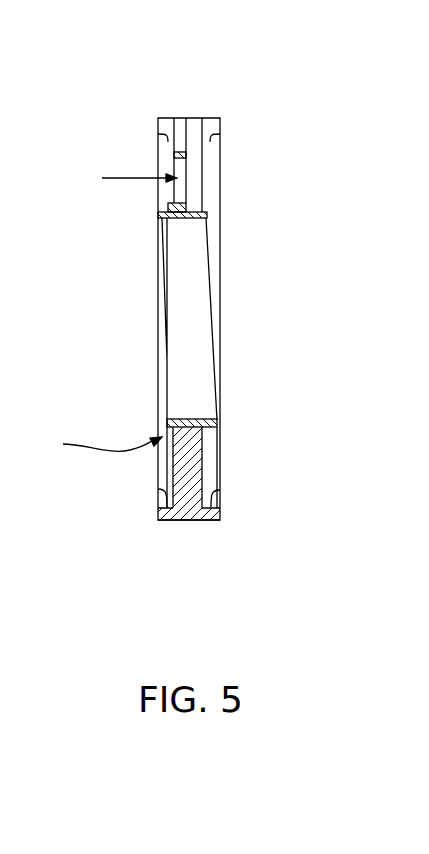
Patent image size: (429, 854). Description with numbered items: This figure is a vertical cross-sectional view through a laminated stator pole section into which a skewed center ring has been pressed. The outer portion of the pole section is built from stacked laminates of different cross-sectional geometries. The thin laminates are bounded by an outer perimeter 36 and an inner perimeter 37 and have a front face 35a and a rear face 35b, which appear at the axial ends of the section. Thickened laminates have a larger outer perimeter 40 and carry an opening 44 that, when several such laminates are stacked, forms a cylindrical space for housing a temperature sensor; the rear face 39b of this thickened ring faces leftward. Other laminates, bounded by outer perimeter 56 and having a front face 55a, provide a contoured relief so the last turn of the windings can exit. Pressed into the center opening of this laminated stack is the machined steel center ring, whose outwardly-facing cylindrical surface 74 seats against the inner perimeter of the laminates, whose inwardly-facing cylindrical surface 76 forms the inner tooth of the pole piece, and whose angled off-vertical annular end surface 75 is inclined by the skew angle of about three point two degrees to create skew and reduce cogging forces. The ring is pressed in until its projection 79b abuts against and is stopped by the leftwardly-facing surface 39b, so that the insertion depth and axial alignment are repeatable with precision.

The front face 35a is at (220, 513).
The rear face 35b is at (158, 513).
The outer perimeter 36 is at (168, 118).
The inner perimeter 37 is at (162, 140).
The rear face 39b is at (158, 155).
The outer perimeter 40 is at (182, 118).
The opening 44 is at (127, 178).
The front face 55a is at (203, 472).
The outer perimeter 56 is at (193, 118).
The outwardly-facing cylindrical horizontal surface 74 is at (193, 206).
The leftwardly and upwardly-facing angled off-vertical annular surface 75 is at (220, 425).
The inwardly-facing horizontal cylindrical surface 76 is at (190, 417).
The projection 79b is at (95, 444).